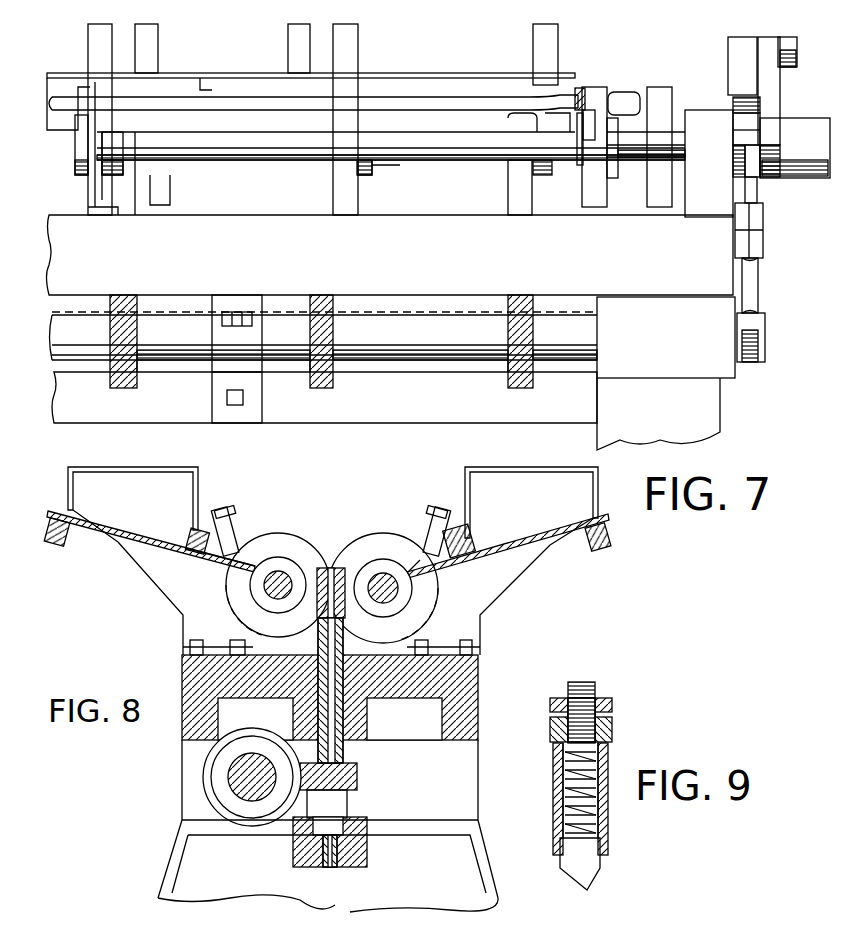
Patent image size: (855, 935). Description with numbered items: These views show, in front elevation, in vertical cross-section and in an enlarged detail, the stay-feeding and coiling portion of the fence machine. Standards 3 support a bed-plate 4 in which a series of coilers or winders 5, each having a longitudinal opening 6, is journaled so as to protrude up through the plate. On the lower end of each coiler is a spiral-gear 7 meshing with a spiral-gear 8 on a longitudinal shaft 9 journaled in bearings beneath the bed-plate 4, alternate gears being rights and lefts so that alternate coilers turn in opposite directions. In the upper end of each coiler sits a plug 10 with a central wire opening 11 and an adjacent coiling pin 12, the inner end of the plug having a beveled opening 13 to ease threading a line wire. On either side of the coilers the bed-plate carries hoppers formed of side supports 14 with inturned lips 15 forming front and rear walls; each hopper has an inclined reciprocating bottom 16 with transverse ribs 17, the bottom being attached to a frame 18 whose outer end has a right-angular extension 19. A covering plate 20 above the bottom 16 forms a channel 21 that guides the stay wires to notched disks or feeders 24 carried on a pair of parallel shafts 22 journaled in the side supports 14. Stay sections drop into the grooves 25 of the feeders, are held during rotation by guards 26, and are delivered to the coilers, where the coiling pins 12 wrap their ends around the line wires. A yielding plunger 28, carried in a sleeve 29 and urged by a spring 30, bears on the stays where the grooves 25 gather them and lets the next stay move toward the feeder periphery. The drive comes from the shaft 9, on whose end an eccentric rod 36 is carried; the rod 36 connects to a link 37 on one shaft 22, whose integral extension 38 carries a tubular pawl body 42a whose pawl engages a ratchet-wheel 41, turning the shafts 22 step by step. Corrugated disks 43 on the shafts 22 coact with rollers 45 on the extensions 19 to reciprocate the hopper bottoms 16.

In FIG. 8, the standards 3 is at (328, 826).
In FIG. 7, the bed-plate 4 is at (390, 255).
In FIG. 8, the bed-plate 4 is at (182, 730).
In FIG. 8, the coilers or winders 5 is at (350, 728).
In FIG. 8, the longitudinal openings 6 is at (333, 858).
In FIG. 8, the spiral-gear 7 is at (357, 772).
In FIG. 7, the spiral-gear 8 is at (130, 392).
In FIG. 8, the spiral-gear 8 is at (208, 784).
In FIG. 7, the longitudinal shaft 9 is at (598, 348).
In FIG. 8, the longitudinal shaft 9 is at (253, 793).
In FIG. 8, the plug 10 is at (345, 575).
In FIG. 8, the wire opening 11 is at (322, 612).
In FIG. 8, the coiling pin 12 is at (332, 566).
In FIG. 8, the beveled opening 13 is at (344, 632).
In FIG. 7, the side supports 14 is at (300, 48).
In FIG. 8, the side supports 14 is at (183, 618).
In FIG. 8, the inturned front and rear lips 15 is at (75, 492).
In FIG. 8, the inclined reciprocal slides or bottoms 16 is at (112, 540).
In FIG. 8, the short extensions, ribs, or ridges 17 is at (185, 545).
In FIG. 7, the frames 18 is at (305, 112).
In FIG. 8, the frames 18 is at (60, 548).
In FIG. 7, the right-angular extensions 19 is at (578, 88).
In FIG. 8, the covering plate 20 is at (190, 530).
In FIG. 8, the channel 21 is at (212, 558).
In FIG. 7, the shafts 22 is at (282, 162).
In FIG. 8, the shafts 22 is at (280, 556).
In FIG. 8, the disks or revoluble carriers or feeders 24 is at (345, 583).
In FIG. 8, the notches or picket-wire-receiving grooves 25 is at (237, 612).
In FIG. 8, the covering plates or guards 26 is at (238, 530).
In FIG. 9, the yielding plungers 28 is at (580, 871).
In FIG. 9, the sleeves 29 is at (608, 816).
In FIG. 9, the spring 30 is at (556, 800).
In FIG. 7, the rod 36 is at (752, 288).
In FIG. 7, the link 37 is at (768, 135).
In FIG. 7, the extension 38 is at (766, 104).
In FIG. 7, the ratchet-wheel 41 is at (746, 136).
In FIG. 7, the tubular bodies 42a is at (748, 47).
In FIG. 7, the disks 43 is at (664, 97).
In FIG. 7, the rollers 45 is at (590, 140).